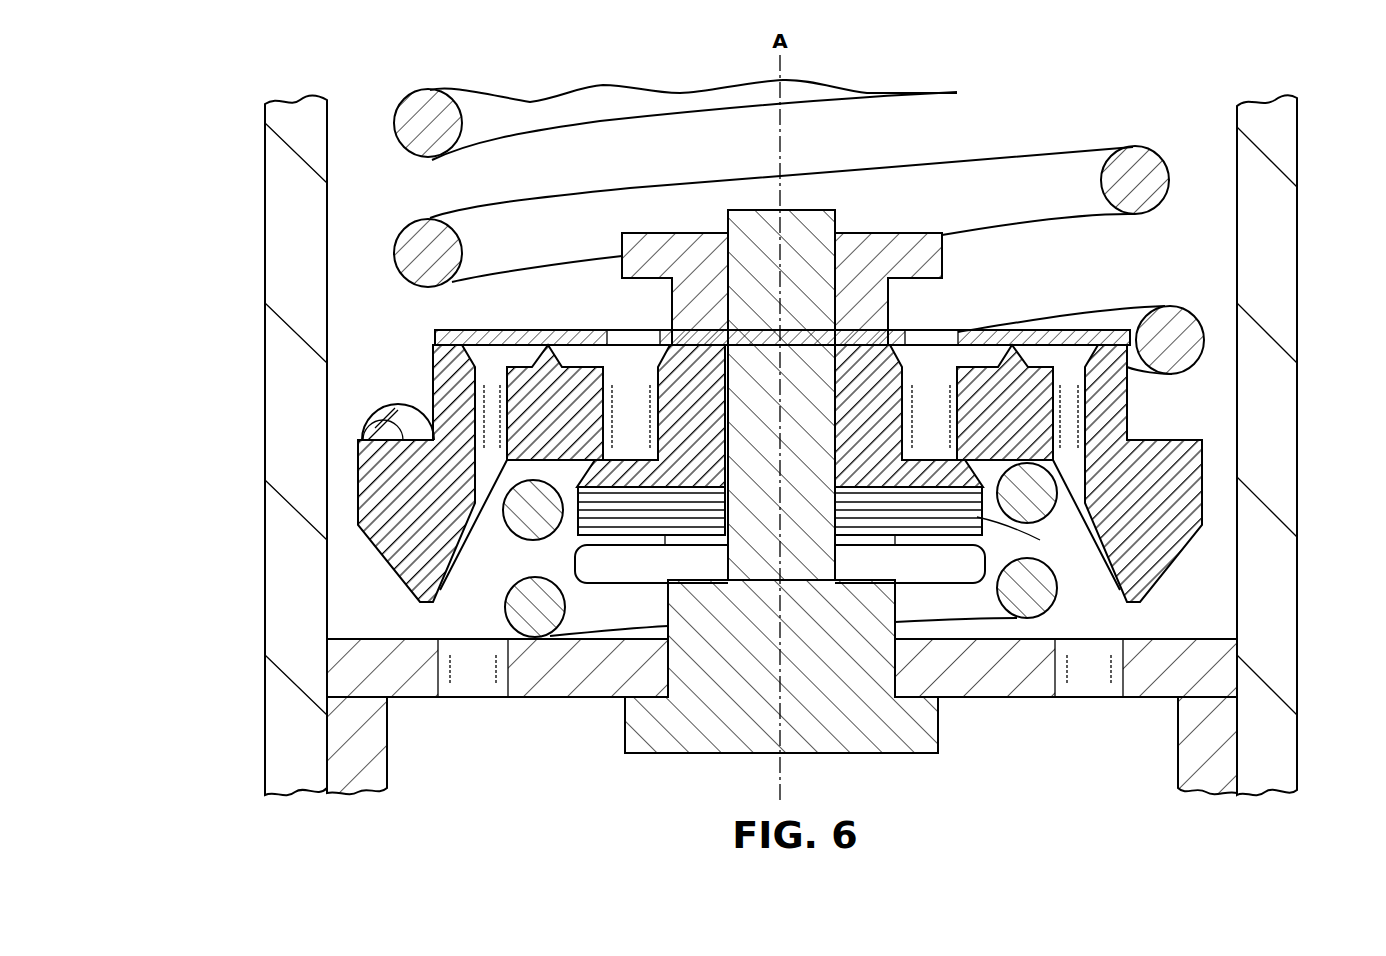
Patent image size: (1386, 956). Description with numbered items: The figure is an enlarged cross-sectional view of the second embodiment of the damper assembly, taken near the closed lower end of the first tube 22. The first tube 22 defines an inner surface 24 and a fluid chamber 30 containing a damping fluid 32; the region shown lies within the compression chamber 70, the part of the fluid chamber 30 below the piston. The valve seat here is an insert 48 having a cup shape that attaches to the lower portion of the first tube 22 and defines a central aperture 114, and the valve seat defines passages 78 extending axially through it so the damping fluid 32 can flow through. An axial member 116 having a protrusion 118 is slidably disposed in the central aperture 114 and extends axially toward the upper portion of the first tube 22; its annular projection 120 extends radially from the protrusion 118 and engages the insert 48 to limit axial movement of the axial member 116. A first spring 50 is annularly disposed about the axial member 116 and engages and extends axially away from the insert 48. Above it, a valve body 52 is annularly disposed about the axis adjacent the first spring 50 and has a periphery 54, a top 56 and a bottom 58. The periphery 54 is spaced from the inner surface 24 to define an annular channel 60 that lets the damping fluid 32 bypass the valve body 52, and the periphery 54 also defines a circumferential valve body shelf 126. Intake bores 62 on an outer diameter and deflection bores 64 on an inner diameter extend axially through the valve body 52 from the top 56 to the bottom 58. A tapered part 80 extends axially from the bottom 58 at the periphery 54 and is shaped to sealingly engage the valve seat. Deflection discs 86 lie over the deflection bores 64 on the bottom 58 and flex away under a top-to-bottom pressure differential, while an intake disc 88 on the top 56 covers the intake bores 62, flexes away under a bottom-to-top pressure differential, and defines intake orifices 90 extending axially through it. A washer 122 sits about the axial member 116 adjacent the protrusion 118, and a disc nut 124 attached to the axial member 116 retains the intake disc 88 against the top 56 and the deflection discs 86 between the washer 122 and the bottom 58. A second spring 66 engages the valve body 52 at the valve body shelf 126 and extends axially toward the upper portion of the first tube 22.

The first tube 22 is at (262, 372).
The inner surface 24 is at (1238, 238).
The fluid chamber 30 is at (327, 152).
The damping fluid 32 is at (1200, 276).
The insert 48 is at (1215, 742).
The first spring 50 is at (550, 638).
The valve body 52 is at (1203, 460).
The periphery 54 is at (362, 484).
The top 56 is at (860, 345).
The bottom 58 is at (600, 493).
The annular channel 60 is at (1240, 482).
The intake bores 62 is at (1082, 482).
The deflection bores 64 is at (433, 394).
The second spring 66 is at (1148, 185).
The compression chamber 70 is at (327, 600).
The passages 78 is at (449, 682).
The tapered part 80 is at (396, 572).
The deflection discs 86 is at (977, 517).
The intake disc 88 is at (435, 336).
The intake orifices 90 is at (630, 330).
The central aperture 114 is at (893, 665).
The axial member 116 is at (728, 671).
The protrusion 118 is at (667, 603).
The annular projection 120 is at (655, 735).
The washer 122 is at (904, 571).
The disc nut 124 is at (855, 269).
The valve body shelf 126 is at (600, 410).